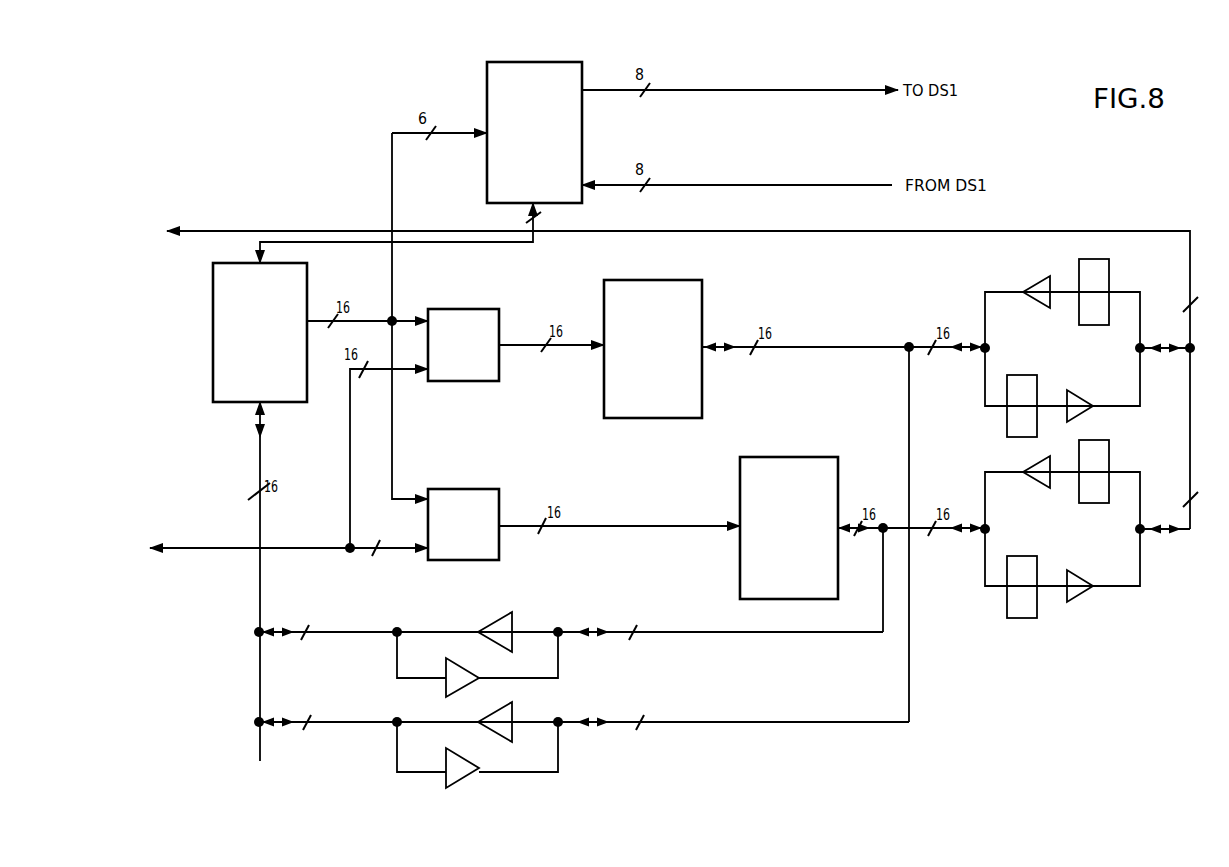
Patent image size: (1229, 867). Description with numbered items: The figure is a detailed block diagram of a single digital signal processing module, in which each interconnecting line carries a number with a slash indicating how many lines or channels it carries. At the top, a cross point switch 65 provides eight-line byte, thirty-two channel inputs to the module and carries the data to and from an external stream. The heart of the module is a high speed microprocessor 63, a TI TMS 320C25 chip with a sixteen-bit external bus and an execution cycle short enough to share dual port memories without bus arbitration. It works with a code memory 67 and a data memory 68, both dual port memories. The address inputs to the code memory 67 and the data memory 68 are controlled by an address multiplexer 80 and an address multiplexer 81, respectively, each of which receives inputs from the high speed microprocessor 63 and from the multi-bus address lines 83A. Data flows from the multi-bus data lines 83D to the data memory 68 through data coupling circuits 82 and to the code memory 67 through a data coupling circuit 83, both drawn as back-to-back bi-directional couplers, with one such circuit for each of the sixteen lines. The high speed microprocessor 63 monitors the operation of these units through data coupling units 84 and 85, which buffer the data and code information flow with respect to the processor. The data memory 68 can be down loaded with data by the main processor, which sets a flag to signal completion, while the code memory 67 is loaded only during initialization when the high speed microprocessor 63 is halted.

The cross point switch 65 is at (487, 90).
The multi-bus data lines 83D is at (268, 229).
The high speed microprocessor 63 is at (213, 305).
The address multiplexer 81 is at (499, 318).
The data memory 68 is at (702, 303).
The data coupling circuits 82 is at (1002, 307).
The address multiplexer 80 is at (499, 498).
The code memory 67 is at (740, 472).
The multi-bus address lines 83A is at (237, 548).
The data coupling unit 85 is at (525, 650).
The data coupling unit 84 is at (545, 753).
The data coupling circuit 83 is at (1112, 563).